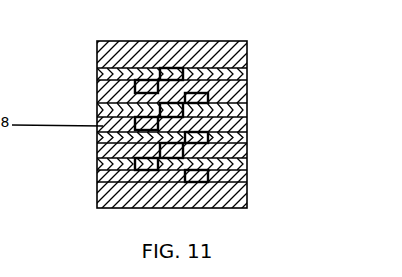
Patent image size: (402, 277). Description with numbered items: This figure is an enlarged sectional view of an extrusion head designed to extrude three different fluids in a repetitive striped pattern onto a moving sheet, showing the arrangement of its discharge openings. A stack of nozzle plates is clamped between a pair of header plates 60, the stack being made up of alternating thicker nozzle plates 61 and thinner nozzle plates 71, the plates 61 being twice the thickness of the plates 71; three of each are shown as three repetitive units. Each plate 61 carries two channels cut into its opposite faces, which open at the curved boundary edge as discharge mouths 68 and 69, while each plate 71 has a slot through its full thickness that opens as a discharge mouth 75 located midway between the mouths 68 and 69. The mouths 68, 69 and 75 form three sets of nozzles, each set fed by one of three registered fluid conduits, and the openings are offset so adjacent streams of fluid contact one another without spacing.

The header plate 60 is at (198, 48).
The nozzle plate 61 is at (103, 95).
The nozzle plate 71 is at (105, 72).
The discharge mouth 75 is at (170, 74).
The discharge mouth 68 is at (146, 85).
The discharge mouth 69 is at (195, 98).